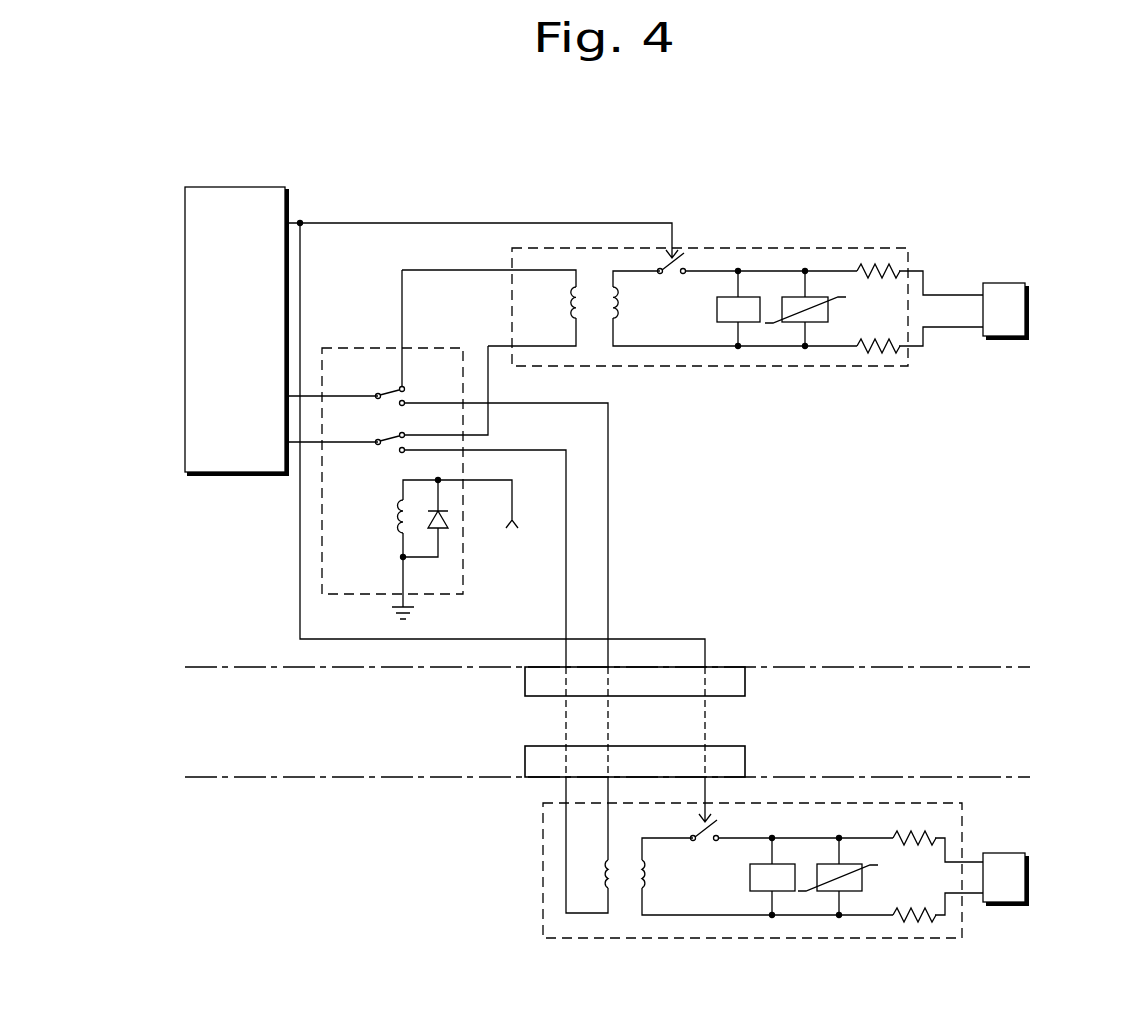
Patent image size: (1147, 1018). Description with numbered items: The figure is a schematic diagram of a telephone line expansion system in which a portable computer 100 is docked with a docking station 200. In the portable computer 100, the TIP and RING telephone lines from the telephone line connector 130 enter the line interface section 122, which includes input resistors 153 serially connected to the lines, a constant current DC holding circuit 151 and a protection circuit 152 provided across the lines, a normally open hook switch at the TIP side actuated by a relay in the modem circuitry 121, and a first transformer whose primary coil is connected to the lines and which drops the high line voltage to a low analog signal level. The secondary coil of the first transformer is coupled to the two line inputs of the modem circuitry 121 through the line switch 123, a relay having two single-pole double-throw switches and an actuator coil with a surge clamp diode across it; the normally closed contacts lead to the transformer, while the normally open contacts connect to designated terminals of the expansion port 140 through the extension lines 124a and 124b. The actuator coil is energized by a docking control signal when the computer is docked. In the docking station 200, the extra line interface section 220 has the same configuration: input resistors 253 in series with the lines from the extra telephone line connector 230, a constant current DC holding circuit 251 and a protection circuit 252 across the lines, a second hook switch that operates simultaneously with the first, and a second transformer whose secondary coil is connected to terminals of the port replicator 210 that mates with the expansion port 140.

The portable computer 100 is at (877, 505).
The modem circuitry 121 is at (237, 187).
The line interface section 122 is at (838, 248).
The line switch 123 is at (343, 348).
The extension line 124a is at (608, 471).
The extension line 124b is at (566, 504).
The telephone line connector 130 is at (1002, 283).
The expansion port 140 is at (745, 681).
The constant current DC holding circuit 151 is at (730, 324).
The protection circuit 152 is at (795, 324).
The input resistors 153 is at (874, 282).
The docking station 200 is at (342, 871).
The port replicator 210 is at (745, 755).
The extra line interface section 220 is at (962, 938).
The extra telephone line connector 230 is at (1002, 853).
The constant current DC holding circuit 251 is at (762, 893).
The protection circuit 252 is at (825, 893).
The input resistors 253 is at (910, 849).